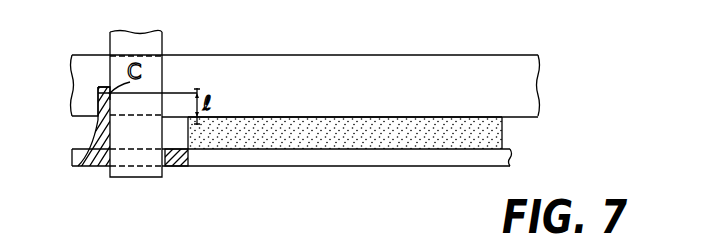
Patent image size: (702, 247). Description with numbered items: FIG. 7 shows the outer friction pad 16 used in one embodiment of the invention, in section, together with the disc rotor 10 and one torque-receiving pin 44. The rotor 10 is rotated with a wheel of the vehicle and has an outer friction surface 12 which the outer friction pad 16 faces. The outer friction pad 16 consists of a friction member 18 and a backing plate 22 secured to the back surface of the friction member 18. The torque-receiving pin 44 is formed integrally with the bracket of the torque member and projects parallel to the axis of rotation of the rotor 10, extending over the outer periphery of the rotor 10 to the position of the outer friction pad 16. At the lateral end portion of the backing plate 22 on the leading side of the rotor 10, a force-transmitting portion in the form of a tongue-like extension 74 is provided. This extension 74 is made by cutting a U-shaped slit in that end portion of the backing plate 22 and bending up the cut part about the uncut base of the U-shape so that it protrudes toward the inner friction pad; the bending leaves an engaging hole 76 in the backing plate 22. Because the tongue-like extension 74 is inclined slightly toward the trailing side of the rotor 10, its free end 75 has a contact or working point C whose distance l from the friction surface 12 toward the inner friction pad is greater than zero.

The disc rotor 10 is at (530, 77).
The outer friction surface 12 is at (307, 122).
The outer friction pad 16 is at (327, 168).
The friction member 18 is at (495, 138).
The backing plate 22 is at (431, 158).
The torque-receiving pin 44 is at (153, 42).
The tongue-like extension 74 is at (100, 133).
The free end 75 is at (98, 95).
The engaging hole 76 is at (165, 160).